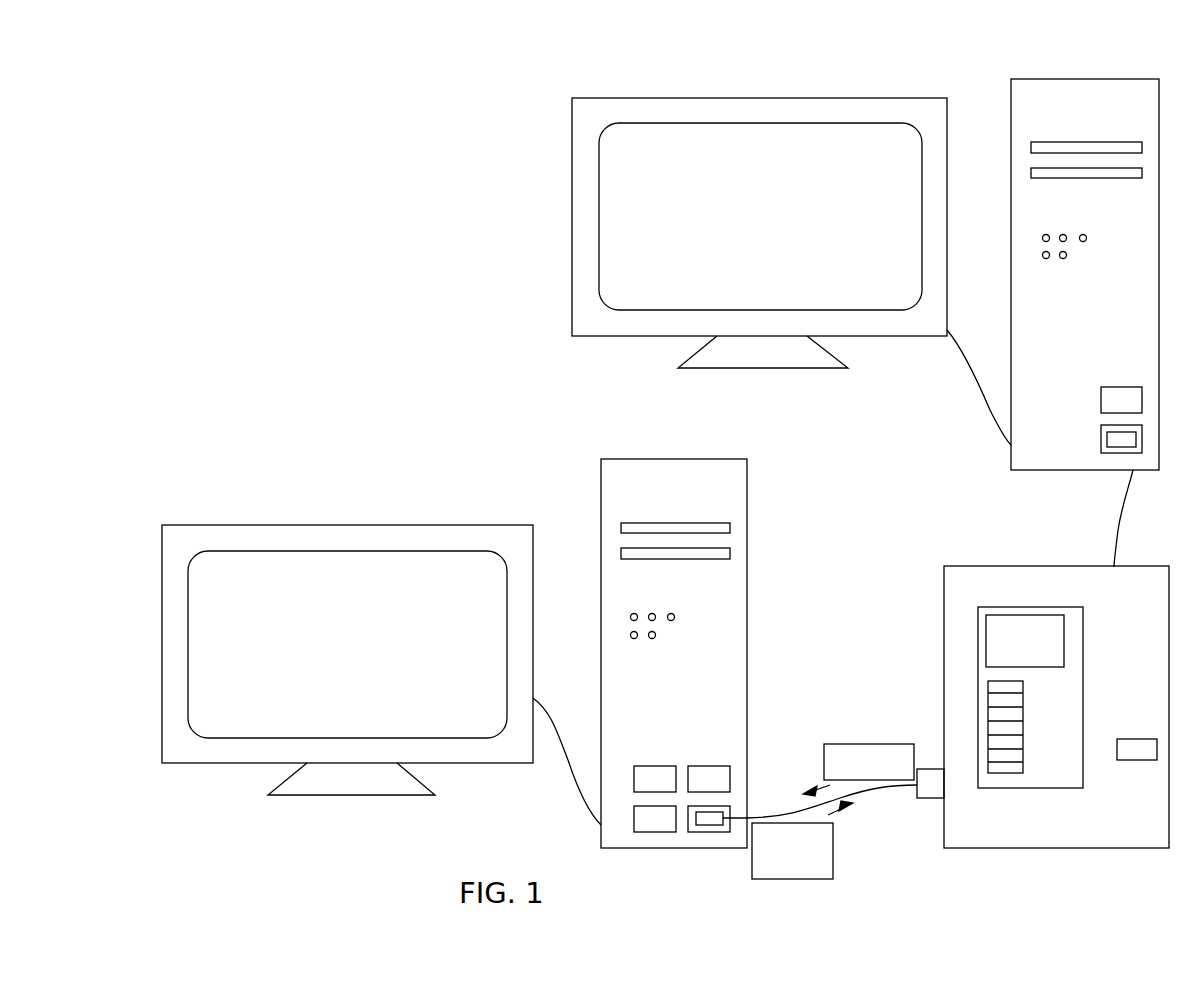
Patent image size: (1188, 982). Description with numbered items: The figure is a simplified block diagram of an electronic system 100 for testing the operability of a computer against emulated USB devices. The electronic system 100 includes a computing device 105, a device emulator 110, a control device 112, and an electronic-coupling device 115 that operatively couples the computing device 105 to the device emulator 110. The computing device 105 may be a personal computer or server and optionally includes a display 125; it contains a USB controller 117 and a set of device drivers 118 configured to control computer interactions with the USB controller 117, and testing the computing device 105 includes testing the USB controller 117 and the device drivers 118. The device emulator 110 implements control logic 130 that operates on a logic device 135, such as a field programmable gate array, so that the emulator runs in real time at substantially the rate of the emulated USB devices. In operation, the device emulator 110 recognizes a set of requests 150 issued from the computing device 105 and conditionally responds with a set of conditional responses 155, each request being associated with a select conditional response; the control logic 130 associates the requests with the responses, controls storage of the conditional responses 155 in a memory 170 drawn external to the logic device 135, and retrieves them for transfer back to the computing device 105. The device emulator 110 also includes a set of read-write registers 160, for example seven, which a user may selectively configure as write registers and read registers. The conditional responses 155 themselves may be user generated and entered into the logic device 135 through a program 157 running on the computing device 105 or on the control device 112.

The electronic system 100 is at (310, 214).
The computing device 105 is at (677, 455).
The device emulator 110 is at (1140, 837).
The control device 112 is at (1088, 74).
The electronic-coupling device 115 is at (889, 789).
The USB controller 117 is at (650, 765).
The set of device drivers 118 is at (656, 832).
The display 125 is at (345, 520).
The control logic 130 is at (1000, 615).
The logic device 135 is at (1083, 636).
The set of requests 150 is at (822, 882).
The set of conditional responses 155 is at (865, 740).
The program 157 is at (722, 528).
The set of read-write registers 160 is at (1023, 702).
The memory 170 is at (1151, 763).